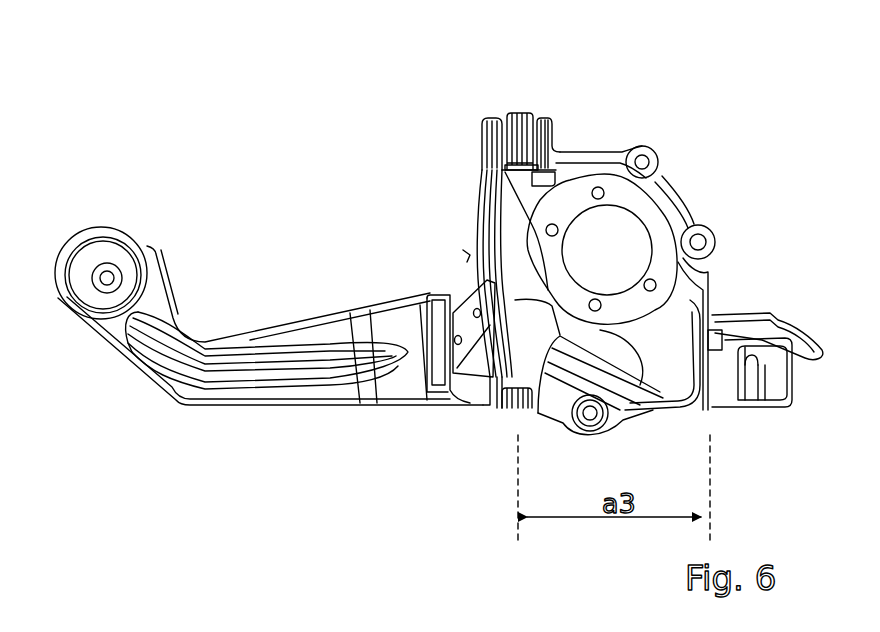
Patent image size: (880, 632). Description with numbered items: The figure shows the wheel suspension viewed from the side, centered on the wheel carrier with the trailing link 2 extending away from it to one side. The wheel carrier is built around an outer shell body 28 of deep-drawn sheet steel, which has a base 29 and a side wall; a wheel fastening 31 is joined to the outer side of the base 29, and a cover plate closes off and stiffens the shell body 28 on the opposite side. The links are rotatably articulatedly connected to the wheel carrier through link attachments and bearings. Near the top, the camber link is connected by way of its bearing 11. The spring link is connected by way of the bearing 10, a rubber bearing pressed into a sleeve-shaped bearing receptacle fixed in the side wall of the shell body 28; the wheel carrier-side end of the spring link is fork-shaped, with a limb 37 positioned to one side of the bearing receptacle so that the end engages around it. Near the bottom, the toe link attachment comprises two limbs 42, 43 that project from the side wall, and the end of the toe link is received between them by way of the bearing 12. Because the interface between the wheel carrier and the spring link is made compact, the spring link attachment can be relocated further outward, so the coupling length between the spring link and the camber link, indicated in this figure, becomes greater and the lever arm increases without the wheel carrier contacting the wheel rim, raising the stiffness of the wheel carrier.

The trailing link 2 is at (310, 322).
The bearing 10 is at (720, 330).
The bearing 11 is at (532, 120).
The bearing 12 is at (507, 410).
The shell body 28 is at (682, 200).
The base 29 is at (552, 192).
The wheel fastening 31 is at (653, 205).
The limb 37 is at (715, 380).
The limb 42 is at (532, 410).
The limb 43 is at (502, 408).